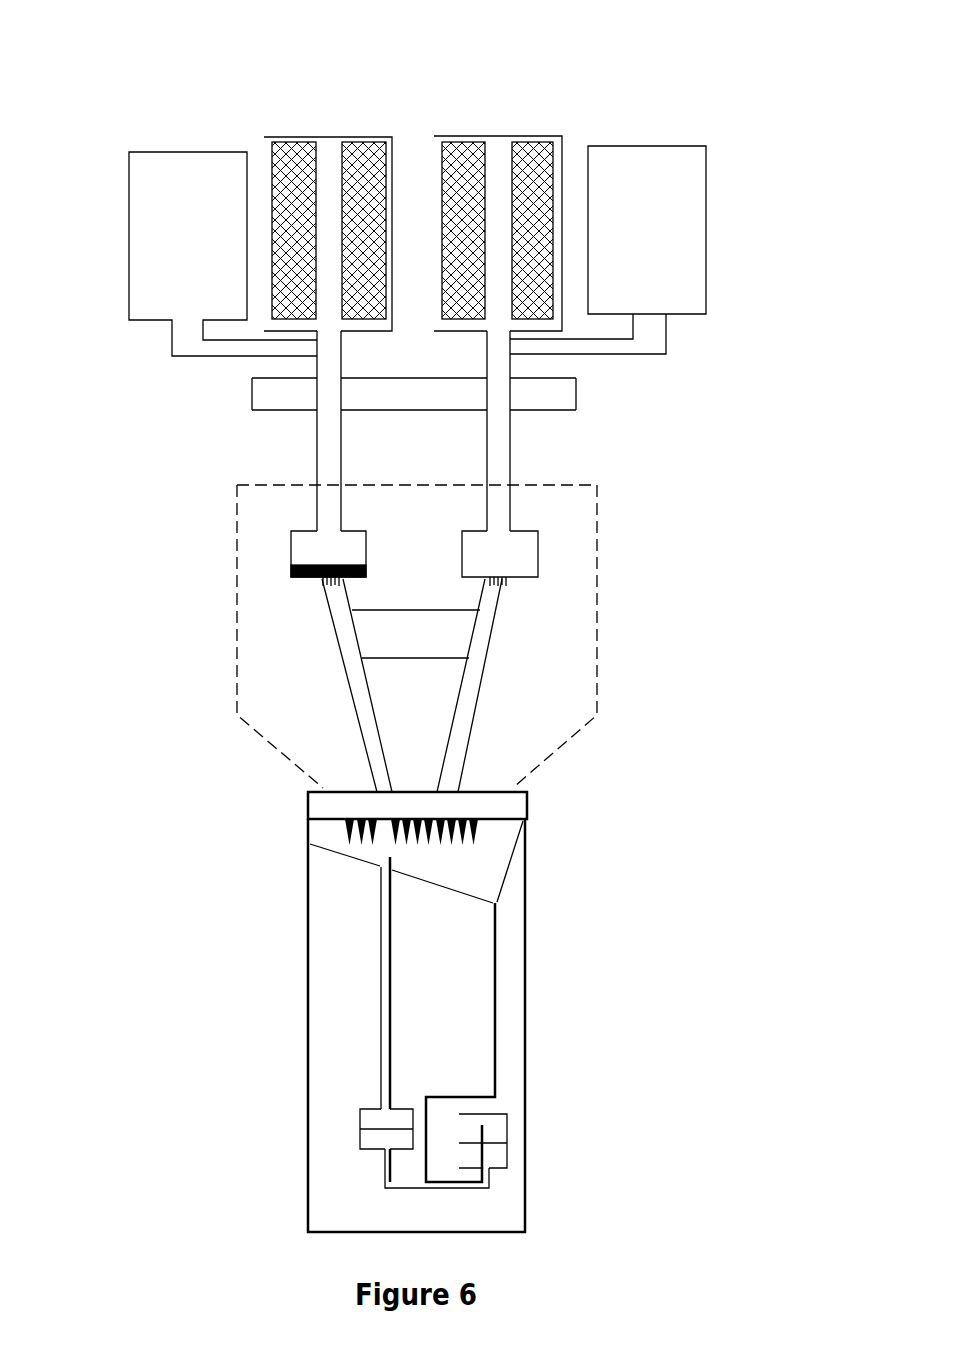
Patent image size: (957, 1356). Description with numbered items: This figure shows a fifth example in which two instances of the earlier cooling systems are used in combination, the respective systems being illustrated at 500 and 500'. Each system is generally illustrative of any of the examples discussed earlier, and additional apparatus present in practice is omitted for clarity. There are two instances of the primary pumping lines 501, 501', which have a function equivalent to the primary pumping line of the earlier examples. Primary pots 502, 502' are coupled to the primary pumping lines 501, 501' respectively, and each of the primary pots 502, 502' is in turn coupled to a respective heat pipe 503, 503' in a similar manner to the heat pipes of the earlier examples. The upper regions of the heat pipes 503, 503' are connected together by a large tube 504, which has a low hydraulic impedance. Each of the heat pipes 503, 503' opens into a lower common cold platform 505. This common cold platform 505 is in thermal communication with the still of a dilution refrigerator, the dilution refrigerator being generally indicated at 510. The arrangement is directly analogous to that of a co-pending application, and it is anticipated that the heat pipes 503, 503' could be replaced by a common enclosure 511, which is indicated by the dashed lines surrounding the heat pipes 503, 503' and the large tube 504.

The system 500 is at (227, 187).
The system 500' is at (626, 178).
The primary pumping line 501 is at (243, 431).
The primary pumping line 501' is at (589, 431).
The primary pot 502 is at (197, 526).
The primary pot 502' is at (630, 535).
The heat pipe 503 is at (257, 687).
The heat pipe 503' is at (571, 685).
The large tube 504 is at (384, 608).
The lower common cold platform 505 is at (527, 797).
The dilution refrigerator 510 is at (526, 1008).
The common enclosure 511 is at (597, 608).